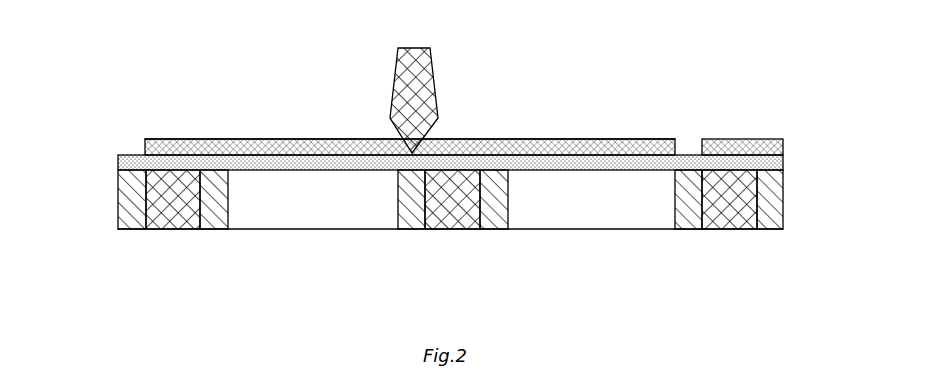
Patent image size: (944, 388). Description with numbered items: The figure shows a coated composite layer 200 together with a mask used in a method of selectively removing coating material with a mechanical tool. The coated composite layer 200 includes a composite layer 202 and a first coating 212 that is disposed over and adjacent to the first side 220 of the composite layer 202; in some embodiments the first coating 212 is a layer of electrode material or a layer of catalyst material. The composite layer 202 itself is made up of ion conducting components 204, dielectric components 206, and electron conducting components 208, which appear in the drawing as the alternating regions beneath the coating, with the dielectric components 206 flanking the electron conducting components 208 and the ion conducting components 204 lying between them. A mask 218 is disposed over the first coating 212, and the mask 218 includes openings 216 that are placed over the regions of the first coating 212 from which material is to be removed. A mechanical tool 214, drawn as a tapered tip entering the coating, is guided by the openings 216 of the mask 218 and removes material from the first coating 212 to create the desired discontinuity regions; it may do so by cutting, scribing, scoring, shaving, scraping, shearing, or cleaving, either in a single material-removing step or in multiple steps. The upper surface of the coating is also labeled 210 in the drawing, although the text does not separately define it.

The coated composite layer 200 is at (137, 55).
The composite layer 202 is at (110, 170).
The ion conducting components 204 is at (298, 224).
The dielectric components 206 is at (133, 226).
The electron conducting components 208 is at (173, 231).
The top surface 210 is at (313, 139).
The first coating 212 is at (237, 138).
The mechanical tool 214 is at (435, 86).
The openings 216 is at (392, 104).
The mask 218 is at (744, 140).
The first side 220 is at (785, 171).